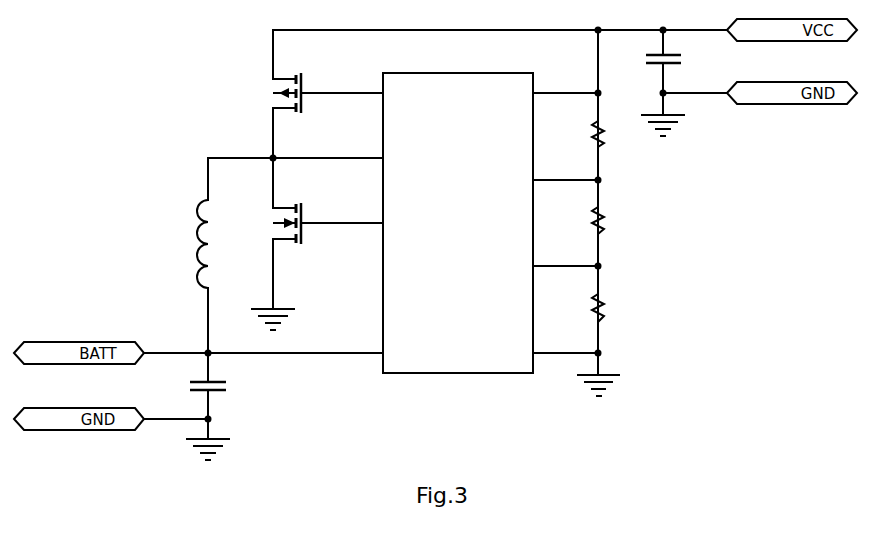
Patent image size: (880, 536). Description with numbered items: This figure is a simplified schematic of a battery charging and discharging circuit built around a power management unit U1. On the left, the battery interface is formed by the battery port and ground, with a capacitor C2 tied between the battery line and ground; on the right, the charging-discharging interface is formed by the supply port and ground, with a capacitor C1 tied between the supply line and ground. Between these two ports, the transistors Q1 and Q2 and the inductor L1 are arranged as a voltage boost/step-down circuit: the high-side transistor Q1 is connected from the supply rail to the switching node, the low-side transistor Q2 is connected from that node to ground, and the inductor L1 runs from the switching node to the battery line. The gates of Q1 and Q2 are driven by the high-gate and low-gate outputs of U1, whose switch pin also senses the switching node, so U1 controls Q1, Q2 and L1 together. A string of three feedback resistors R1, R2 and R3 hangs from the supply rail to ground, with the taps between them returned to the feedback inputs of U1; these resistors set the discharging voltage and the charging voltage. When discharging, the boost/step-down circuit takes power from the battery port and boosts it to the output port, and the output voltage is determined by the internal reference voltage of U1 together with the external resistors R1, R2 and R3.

The control unit U1 is at (458, 225).
The transistor Q1 is at (292, 82).
The transistor Q2 is at (292, 214).
The inductor L1 is at (215, 244).
The capacitor C1 is at (674, 60).
The capacitor C2 is at (219, 386).
The feedback resistor R1 is at (608, 132).
The feedback resistor R2 is at (608, 219).
The feedback resistor R3 is at (608, 306).